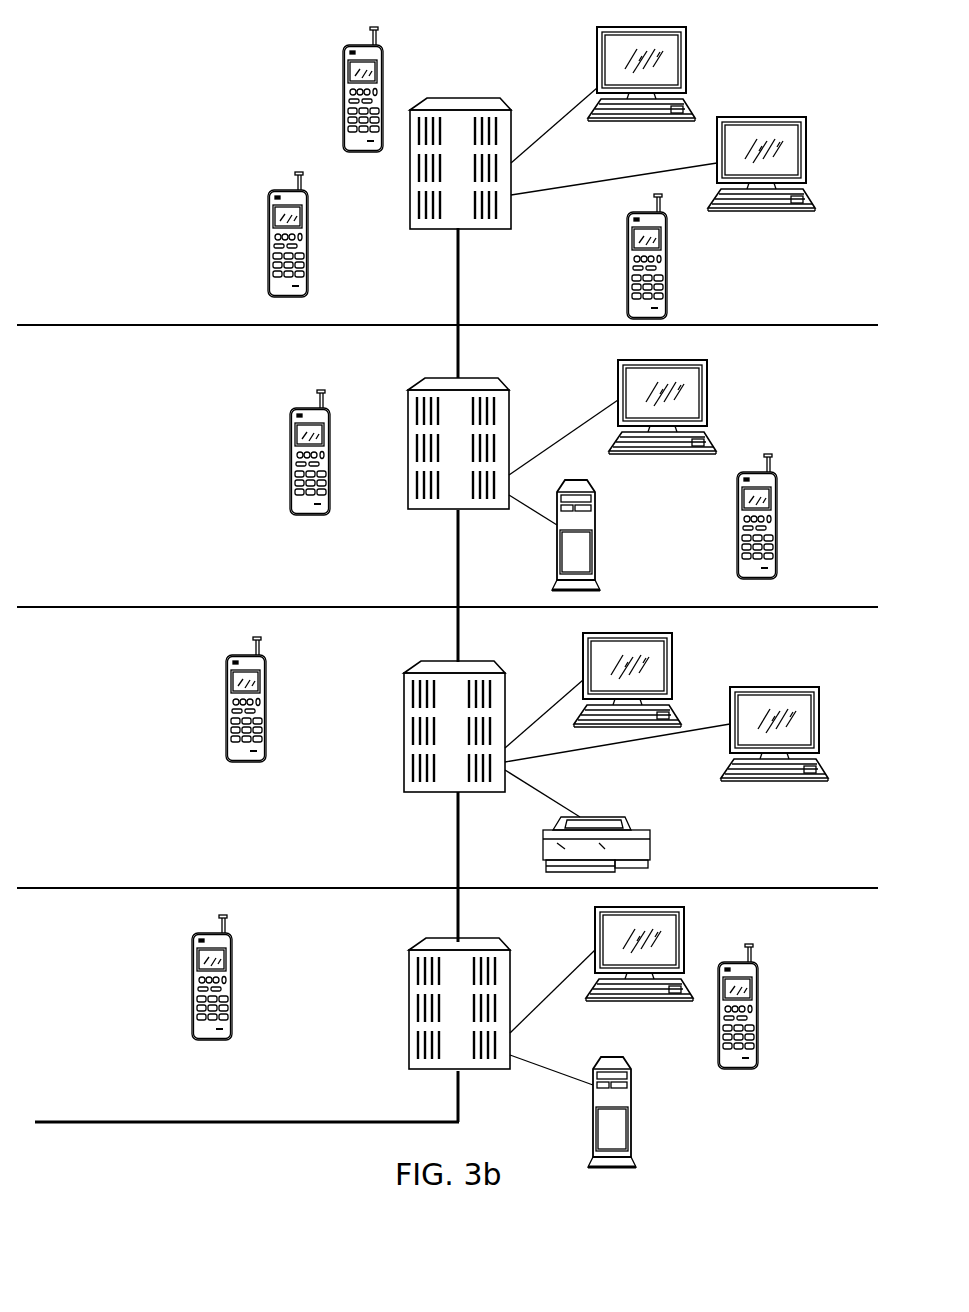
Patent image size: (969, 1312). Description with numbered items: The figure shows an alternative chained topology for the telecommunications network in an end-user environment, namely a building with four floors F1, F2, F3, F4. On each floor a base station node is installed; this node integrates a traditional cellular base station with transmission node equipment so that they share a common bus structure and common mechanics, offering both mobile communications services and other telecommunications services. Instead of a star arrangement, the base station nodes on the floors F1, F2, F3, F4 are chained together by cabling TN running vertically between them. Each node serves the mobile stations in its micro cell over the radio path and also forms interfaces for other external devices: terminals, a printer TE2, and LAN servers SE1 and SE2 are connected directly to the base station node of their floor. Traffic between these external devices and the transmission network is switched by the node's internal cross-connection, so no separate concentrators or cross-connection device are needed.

The printer TE2 is at (608, 817).
The LAN server SE1 is at (596, 554).
The LAN server SE2 is at (632, 1131).
The cabling TN is at (450, 868).
The floor F1 is at (89, 959).
The floor F2 is at (89, 674).
The floor F3 is at (89, 401).
The floor F4 is at (91, 137).